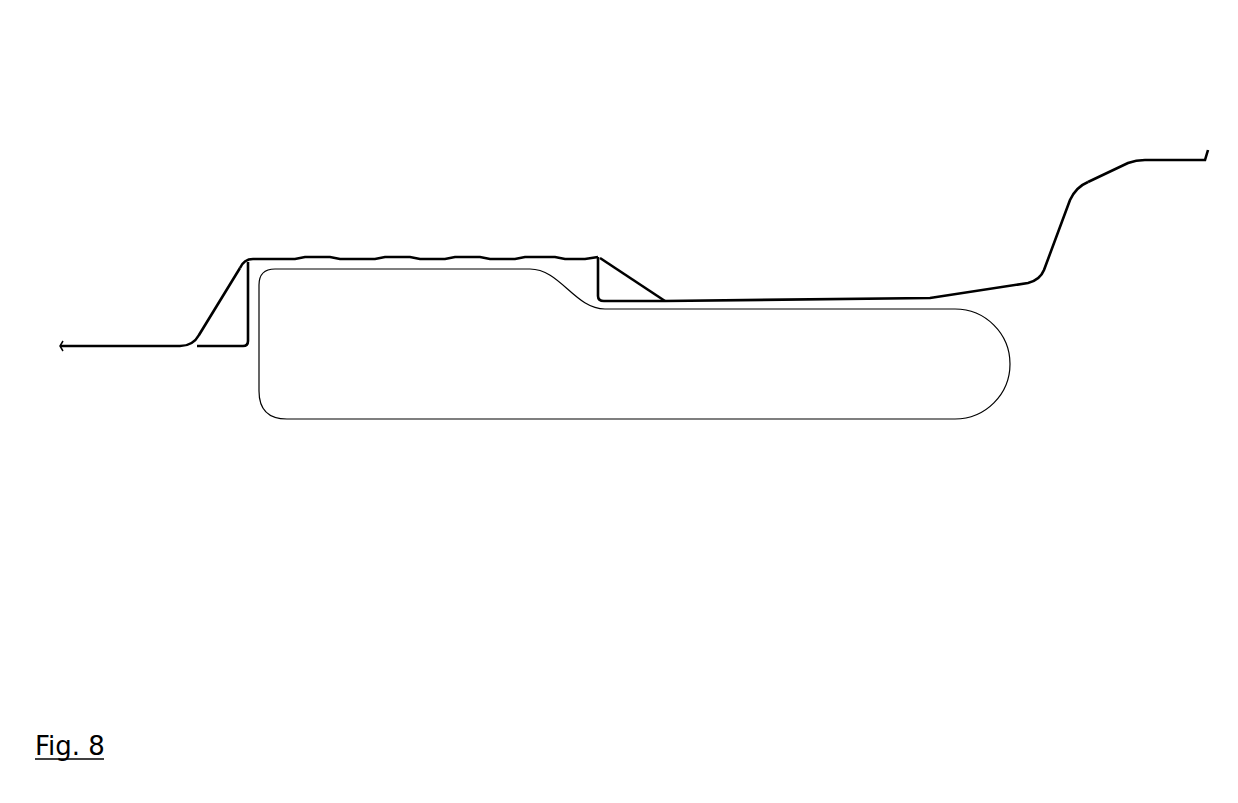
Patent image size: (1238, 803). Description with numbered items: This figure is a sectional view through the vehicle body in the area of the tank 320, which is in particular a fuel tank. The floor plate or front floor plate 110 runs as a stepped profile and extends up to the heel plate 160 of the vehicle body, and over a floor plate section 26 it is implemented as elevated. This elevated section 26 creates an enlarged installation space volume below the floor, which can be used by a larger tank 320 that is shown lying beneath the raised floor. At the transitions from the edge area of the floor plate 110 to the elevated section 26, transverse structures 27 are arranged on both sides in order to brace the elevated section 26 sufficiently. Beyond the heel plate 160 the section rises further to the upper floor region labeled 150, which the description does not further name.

The front floor plate 110 is at (133, 346).
The elevated section 26 is at (312, 258).
The transverse structures 27 is at (622, 288).
The heel plate 160 is at (1050, 250).
The upper flange 150 is at (1197, 158).
The tank 320 is at (760, 443).